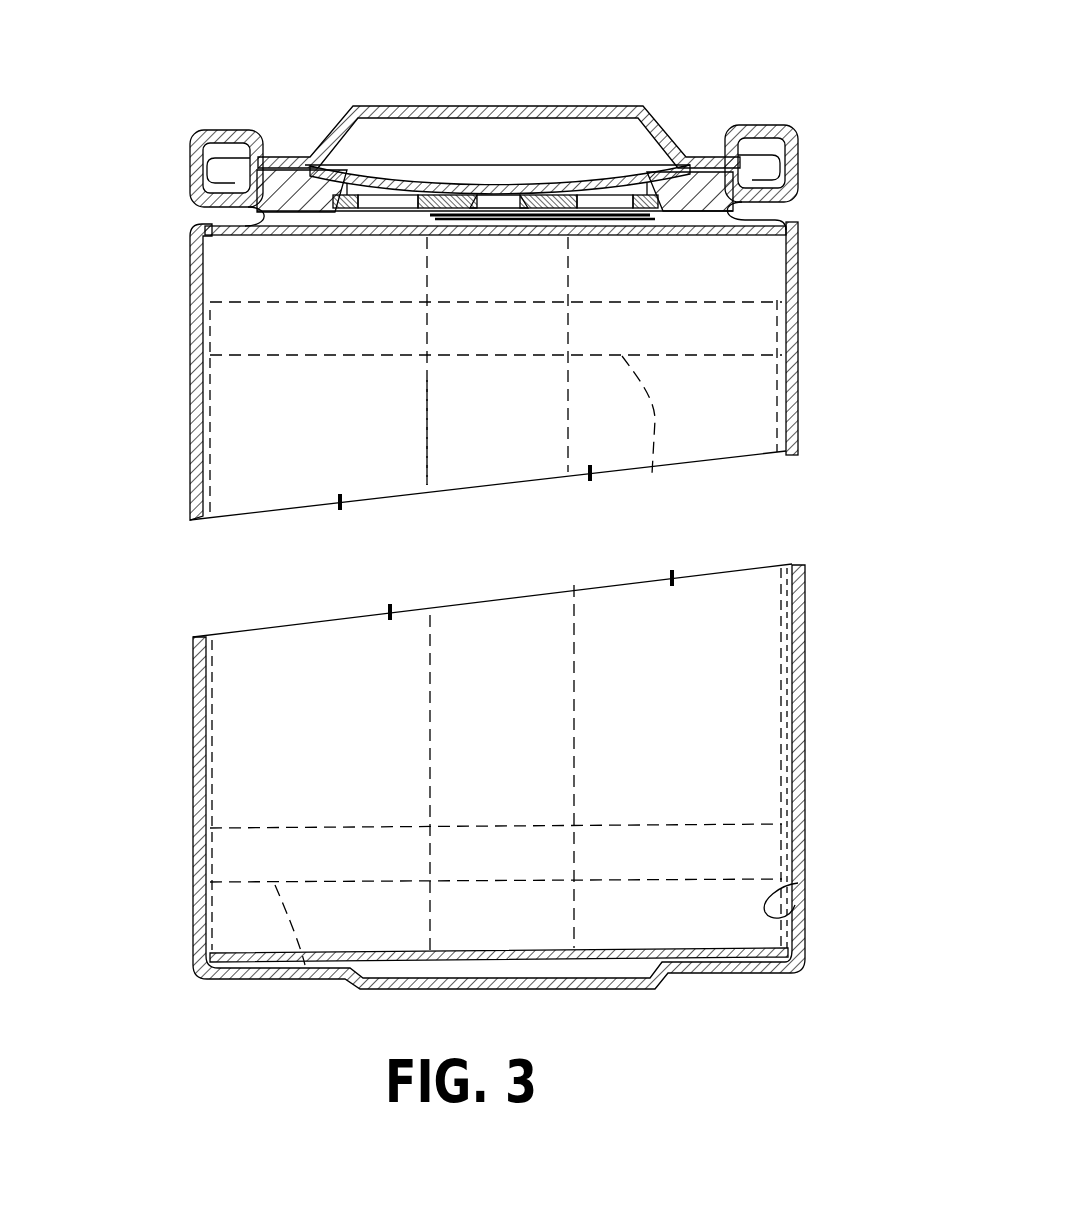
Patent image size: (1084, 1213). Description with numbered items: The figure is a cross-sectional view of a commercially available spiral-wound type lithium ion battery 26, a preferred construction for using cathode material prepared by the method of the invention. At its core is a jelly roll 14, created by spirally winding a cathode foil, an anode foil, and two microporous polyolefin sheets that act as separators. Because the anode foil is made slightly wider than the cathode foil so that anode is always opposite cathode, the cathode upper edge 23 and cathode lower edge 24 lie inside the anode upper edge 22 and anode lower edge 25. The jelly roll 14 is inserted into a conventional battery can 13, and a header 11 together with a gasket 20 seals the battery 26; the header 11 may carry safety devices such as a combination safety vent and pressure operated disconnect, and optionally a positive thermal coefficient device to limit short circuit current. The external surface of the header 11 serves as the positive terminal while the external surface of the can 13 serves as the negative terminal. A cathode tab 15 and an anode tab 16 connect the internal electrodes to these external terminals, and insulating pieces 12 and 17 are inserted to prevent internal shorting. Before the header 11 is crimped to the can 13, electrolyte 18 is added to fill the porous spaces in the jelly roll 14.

The header 11 is at (499, 108).
The insulating piece 12 is at (800, 222).
The battery can 13 is at (797, 340).
The jelly roll 14 is at (744, 423).
The cathode tab 15 is at (427, 470).
The anode tab 16 is at (798, 883).
The insulating piece 17 is at (805, 950).
The electrolyte 18 is at (753, 655).
The gasket 20 is at (790, 148).
The anode upper edge 22 is at (245, 303).
The cathode upper edge 23 is at (657, 444).
The cathode lower edge 24 is at (272, 828).
The anode lower edge 25 is at (303, 985).
The battery 26 is at (211, 124).